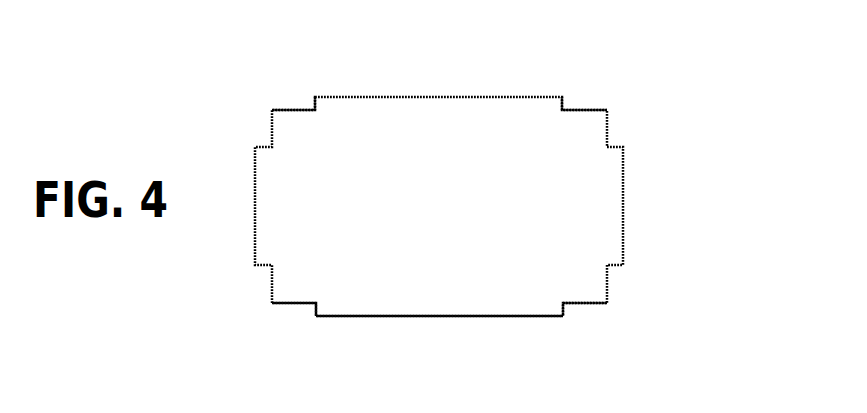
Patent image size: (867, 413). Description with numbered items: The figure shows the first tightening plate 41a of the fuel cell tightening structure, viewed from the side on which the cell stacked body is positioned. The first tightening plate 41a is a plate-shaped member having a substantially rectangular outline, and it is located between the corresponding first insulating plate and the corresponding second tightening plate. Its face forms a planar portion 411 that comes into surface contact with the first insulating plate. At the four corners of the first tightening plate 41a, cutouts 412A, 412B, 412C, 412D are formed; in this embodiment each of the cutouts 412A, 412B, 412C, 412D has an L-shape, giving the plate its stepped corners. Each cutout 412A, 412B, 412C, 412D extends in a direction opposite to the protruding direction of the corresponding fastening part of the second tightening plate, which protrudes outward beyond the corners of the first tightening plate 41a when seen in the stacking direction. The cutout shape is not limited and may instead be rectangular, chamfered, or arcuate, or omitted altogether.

The first tightening plate 41a is at (645, 78).
The planar portion 411 is at (448, 290).
The cutout 412A is at (292, 107).
The cutout 412B is at (608, 126).
The cutout 412C is at (585, 305).
The cutout 412D is at (288, 305).